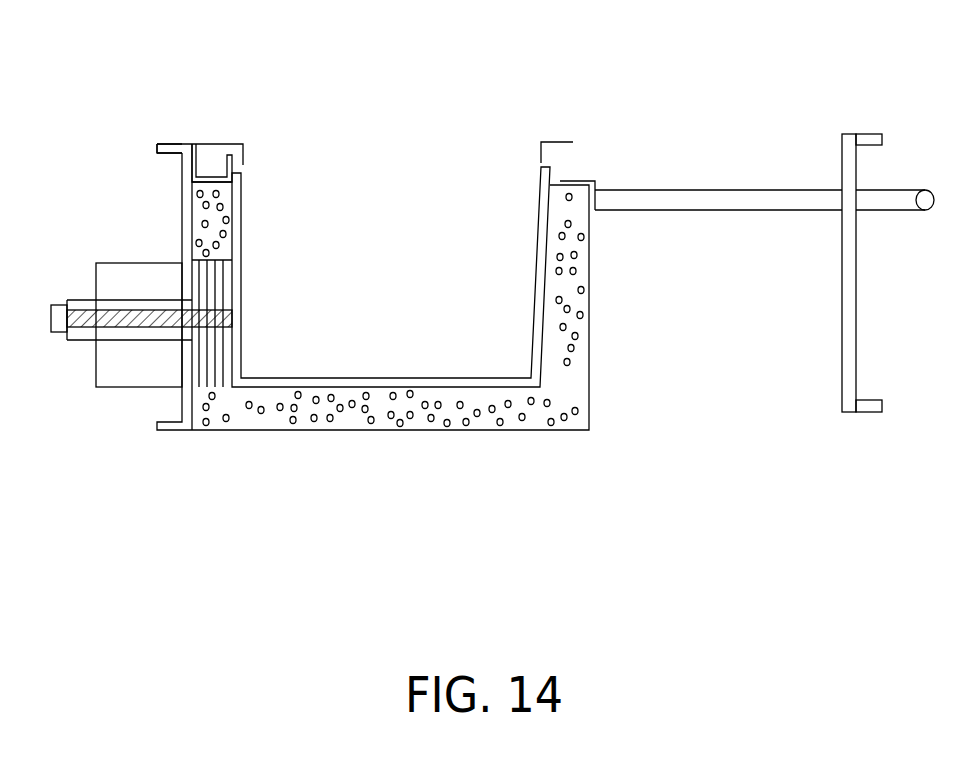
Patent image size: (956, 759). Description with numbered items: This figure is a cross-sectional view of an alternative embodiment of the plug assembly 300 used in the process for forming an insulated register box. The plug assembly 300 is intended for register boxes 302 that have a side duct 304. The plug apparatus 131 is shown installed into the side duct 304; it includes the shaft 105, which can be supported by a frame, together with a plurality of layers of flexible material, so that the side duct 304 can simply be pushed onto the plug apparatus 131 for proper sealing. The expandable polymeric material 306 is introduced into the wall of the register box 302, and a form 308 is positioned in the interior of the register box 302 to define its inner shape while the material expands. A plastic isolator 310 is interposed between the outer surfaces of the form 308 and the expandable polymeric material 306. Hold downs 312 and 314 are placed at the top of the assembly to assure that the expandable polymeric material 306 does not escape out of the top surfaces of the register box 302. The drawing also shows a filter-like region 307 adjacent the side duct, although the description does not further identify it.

The plug assembly 300 is at (646, 84).
The register box 302 is at (588, 372).
The side duct 304 is at (135, 262).
The shaft 105 is at (90, 292).
The plug apparatus 131 is at (77, 345).
The expandable polymeric material 306 is at (578, 292).
The filter 307 is at (228, 282).
The form 308 is at (533, 286).
The plastic isolator 310 is at (207, 145).
The hold down 312 is at (162, 145).
The hold down 314 is at (597, 182).